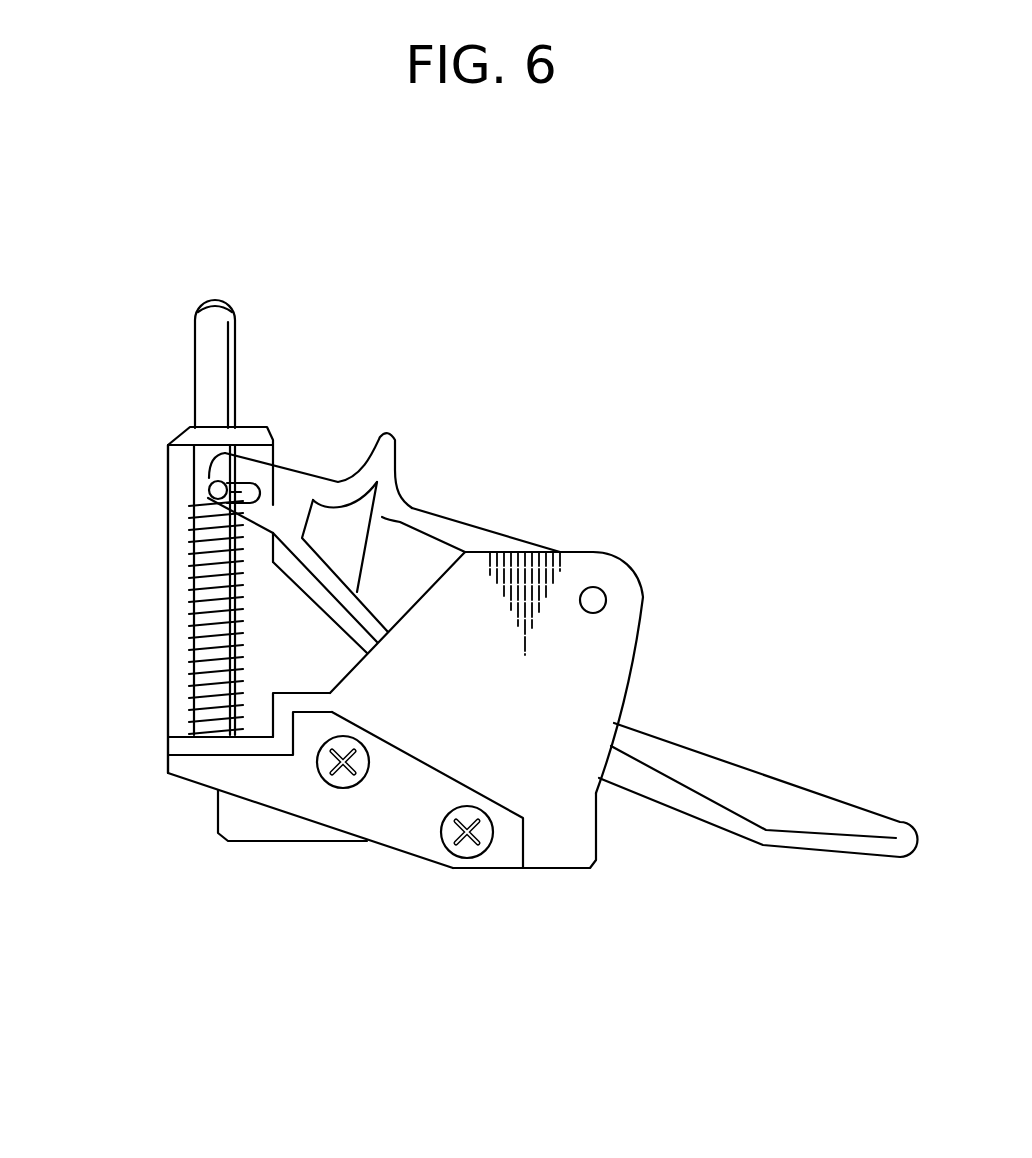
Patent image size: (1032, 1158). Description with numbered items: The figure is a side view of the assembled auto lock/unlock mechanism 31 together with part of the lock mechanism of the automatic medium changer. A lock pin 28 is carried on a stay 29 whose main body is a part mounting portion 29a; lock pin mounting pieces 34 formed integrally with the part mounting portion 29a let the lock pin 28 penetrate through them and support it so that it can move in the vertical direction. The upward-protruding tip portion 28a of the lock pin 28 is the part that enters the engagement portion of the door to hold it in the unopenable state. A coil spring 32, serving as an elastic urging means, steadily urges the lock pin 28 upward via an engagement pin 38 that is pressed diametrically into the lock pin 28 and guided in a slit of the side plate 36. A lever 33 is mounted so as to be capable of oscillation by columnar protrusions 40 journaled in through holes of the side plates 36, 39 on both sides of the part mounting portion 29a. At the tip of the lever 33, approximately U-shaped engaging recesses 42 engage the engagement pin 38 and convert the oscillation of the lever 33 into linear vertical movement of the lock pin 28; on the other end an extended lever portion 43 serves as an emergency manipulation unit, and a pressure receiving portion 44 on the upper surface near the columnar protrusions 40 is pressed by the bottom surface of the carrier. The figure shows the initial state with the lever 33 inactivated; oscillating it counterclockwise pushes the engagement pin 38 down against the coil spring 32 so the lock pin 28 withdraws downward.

The lock pin 28 is at (205, 381).
The tip portion of the lock pin 28a is at (210, 300).
The stay 29 is at (262, 850).
The part mounting portion 29a is at (555, 847).
The auto lock/unlock mechanism 31 is at (636, 434).
The coil spring 32 is at (192, 590).
The lever 33 is at (287, 638).
The lock pin mounting piece 34 is at (268, 437).
The side plate 36 is at (177, 548).
The engagement pin 38 is at (208, 490).
The side plate 39 is at (595, 680).
The columnar protrusion 40 is at (596, 600).
The engaging recess 42 is at (240, 463).
The extended lever portion 43 is at (827, 805).
The pressure receiving portion 44 is at (470, 522).